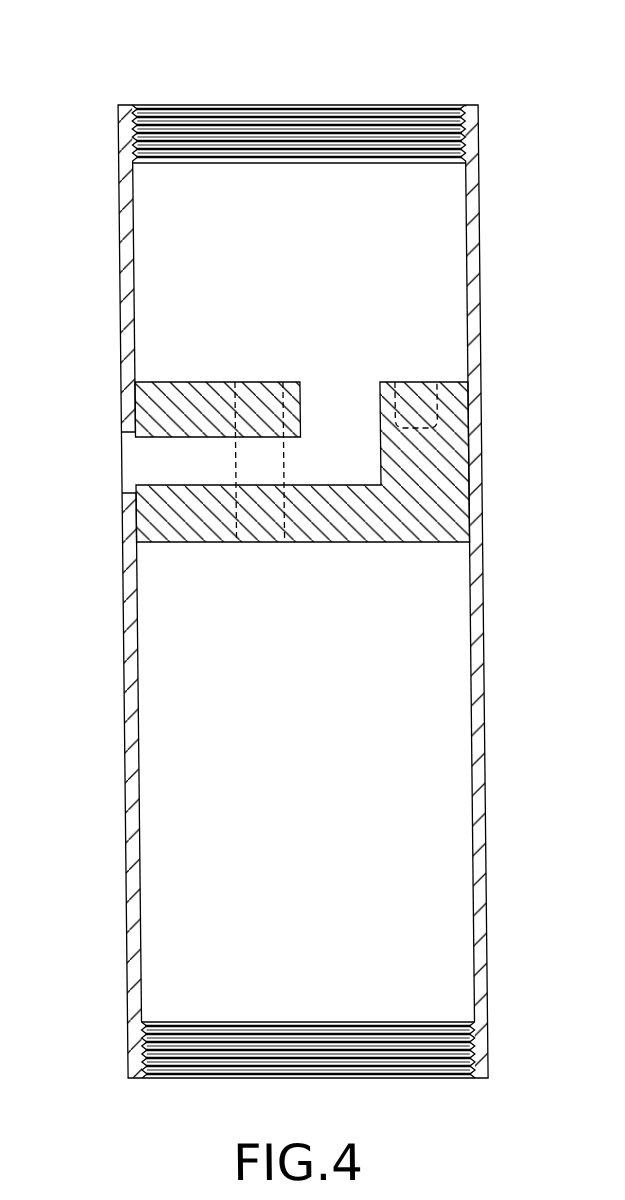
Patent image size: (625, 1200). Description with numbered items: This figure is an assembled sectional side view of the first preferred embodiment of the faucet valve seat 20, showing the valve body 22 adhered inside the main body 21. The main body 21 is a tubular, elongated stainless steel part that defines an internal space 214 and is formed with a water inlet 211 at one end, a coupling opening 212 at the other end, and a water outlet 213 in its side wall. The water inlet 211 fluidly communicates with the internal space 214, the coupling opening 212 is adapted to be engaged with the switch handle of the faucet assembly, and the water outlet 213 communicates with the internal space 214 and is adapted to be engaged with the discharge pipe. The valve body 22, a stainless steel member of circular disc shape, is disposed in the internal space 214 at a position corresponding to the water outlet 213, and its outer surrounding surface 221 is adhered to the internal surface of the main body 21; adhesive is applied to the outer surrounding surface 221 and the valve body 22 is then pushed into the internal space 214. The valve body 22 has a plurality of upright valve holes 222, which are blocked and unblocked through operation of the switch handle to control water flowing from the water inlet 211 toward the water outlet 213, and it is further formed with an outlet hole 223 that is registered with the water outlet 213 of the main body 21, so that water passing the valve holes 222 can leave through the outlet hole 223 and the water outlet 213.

The faucet valve seat 20 is at (303, 578).
The main body 21 is at (473, 735).
The water inlet 211 is at (429, 1060).
The coupling opening 212 is at (381, 125).
The water outlet 213 is at (125, 463).
The internal space 214 is at (124, 344).
The valve body 22 is at (358, 501).
The outer surrounding surface 221 is at (468, 418).
The valve holes 222 is at (264, 542).
The outlet hole 223 is at (194, 470).